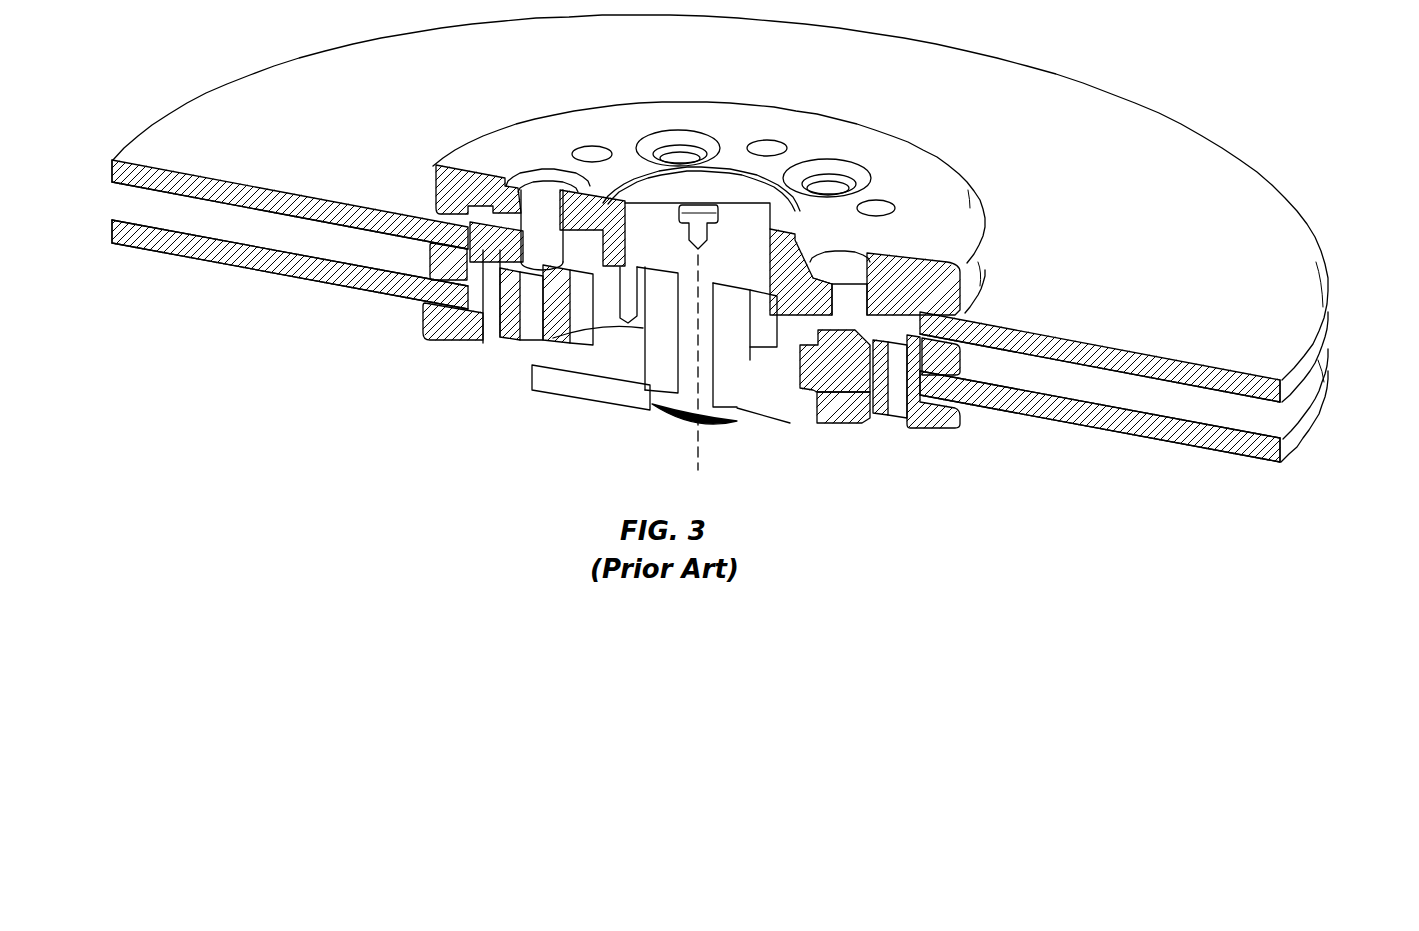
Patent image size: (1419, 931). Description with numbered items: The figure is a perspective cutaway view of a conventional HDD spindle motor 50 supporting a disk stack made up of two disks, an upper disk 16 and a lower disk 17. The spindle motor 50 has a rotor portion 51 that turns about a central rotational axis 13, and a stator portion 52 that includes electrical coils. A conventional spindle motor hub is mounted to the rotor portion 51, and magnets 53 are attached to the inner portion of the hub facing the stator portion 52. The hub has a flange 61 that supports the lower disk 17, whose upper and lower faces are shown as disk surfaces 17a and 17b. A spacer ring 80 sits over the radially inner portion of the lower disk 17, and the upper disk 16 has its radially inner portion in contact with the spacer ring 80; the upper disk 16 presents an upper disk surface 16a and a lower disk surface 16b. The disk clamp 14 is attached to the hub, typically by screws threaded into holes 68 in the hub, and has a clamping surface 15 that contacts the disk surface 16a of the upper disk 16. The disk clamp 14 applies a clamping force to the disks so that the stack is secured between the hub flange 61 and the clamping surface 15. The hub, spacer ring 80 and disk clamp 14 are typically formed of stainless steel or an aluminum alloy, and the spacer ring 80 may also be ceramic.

The central rotational axis 13 is at (697, 435).
The disk clamp 14 is at (733, 202).
The clamping surface 15 is at (982, 228).
The upper disk 16 is at (729, 213).
The disk surface 16a is at (1084, 90).
The bottom surface of first disk 16b is at (1163, 382).
The lower disk 17 is at (754, 354).
The top surface of second disk 17a is at (1283, 427).
The bottom surface of second disk 17b is at (1207, 452).
The HDD spindle motor 50 is at (610, 397).
The rotor portion 51 is at (707, 387).
The stator portion 52 is at (557, 348).
The magnets 53 is at (508, 340).
The flange 61 is at (938, 423).
The holes 68 is at (853, 304).
The spacer ring 80 is at (953, 350).